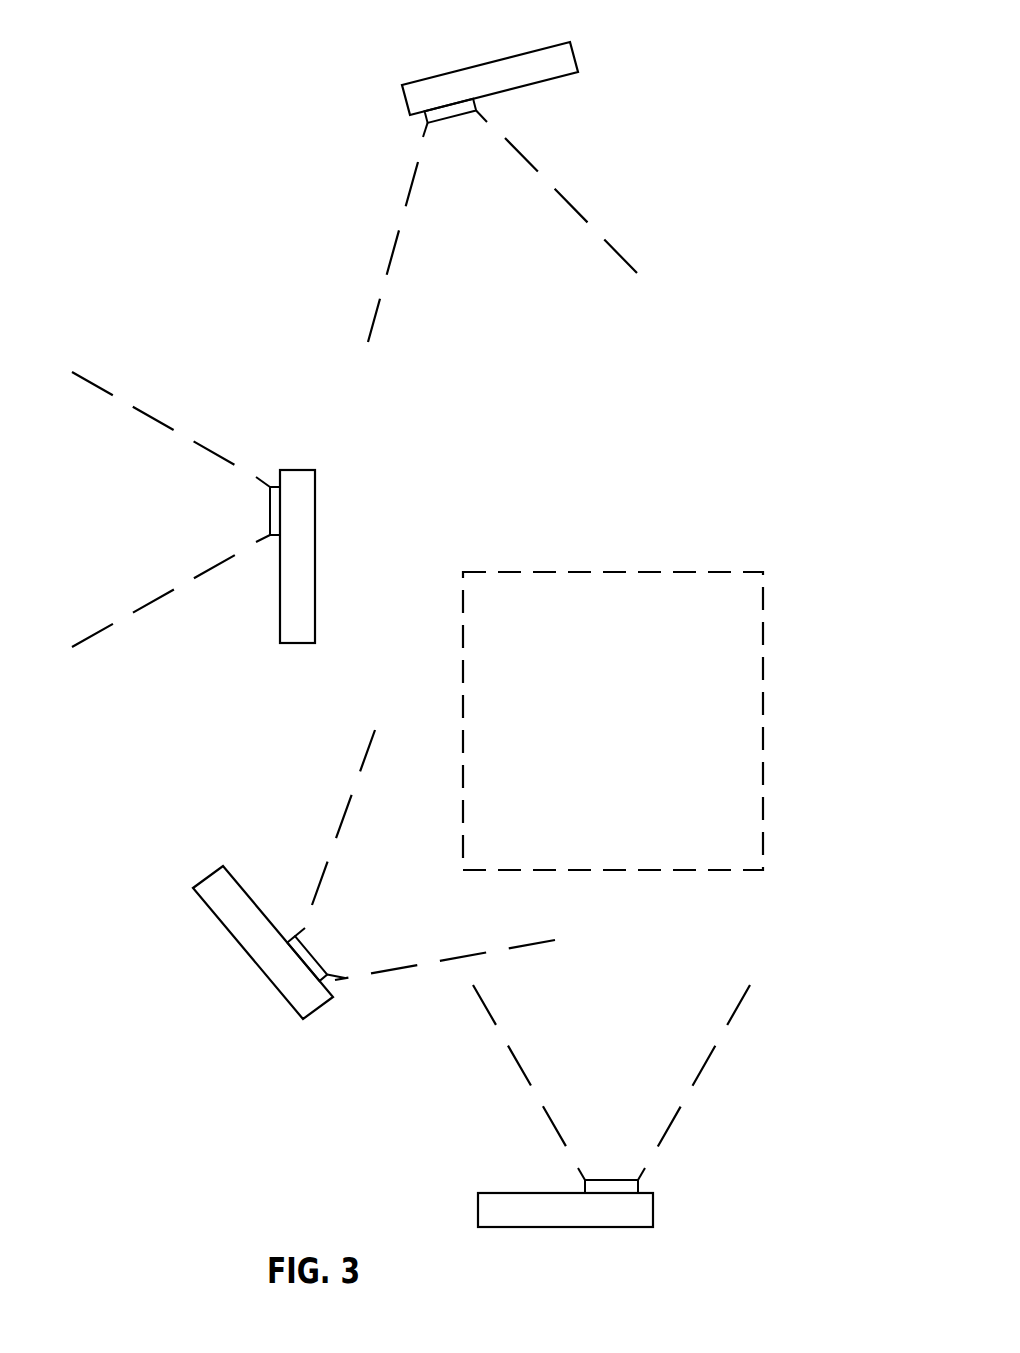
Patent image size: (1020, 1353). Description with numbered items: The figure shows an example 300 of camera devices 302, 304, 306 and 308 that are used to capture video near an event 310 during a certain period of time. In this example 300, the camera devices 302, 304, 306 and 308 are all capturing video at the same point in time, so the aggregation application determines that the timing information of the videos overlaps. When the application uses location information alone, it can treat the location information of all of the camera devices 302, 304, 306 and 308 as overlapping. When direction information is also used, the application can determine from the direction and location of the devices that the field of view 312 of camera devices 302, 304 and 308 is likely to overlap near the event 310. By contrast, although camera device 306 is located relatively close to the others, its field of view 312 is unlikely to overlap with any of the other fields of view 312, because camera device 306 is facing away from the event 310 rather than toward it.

The example 300 is at (412, 43).
The camera device 302 is at (653, 1213).
The camera device 304 is at (230, 873).
The camera device 306 is at (315, 487).
The camera device 308 is at (580, 52).
The event 310 is at (765, 603).
The field of view 312 is at (622, 247).